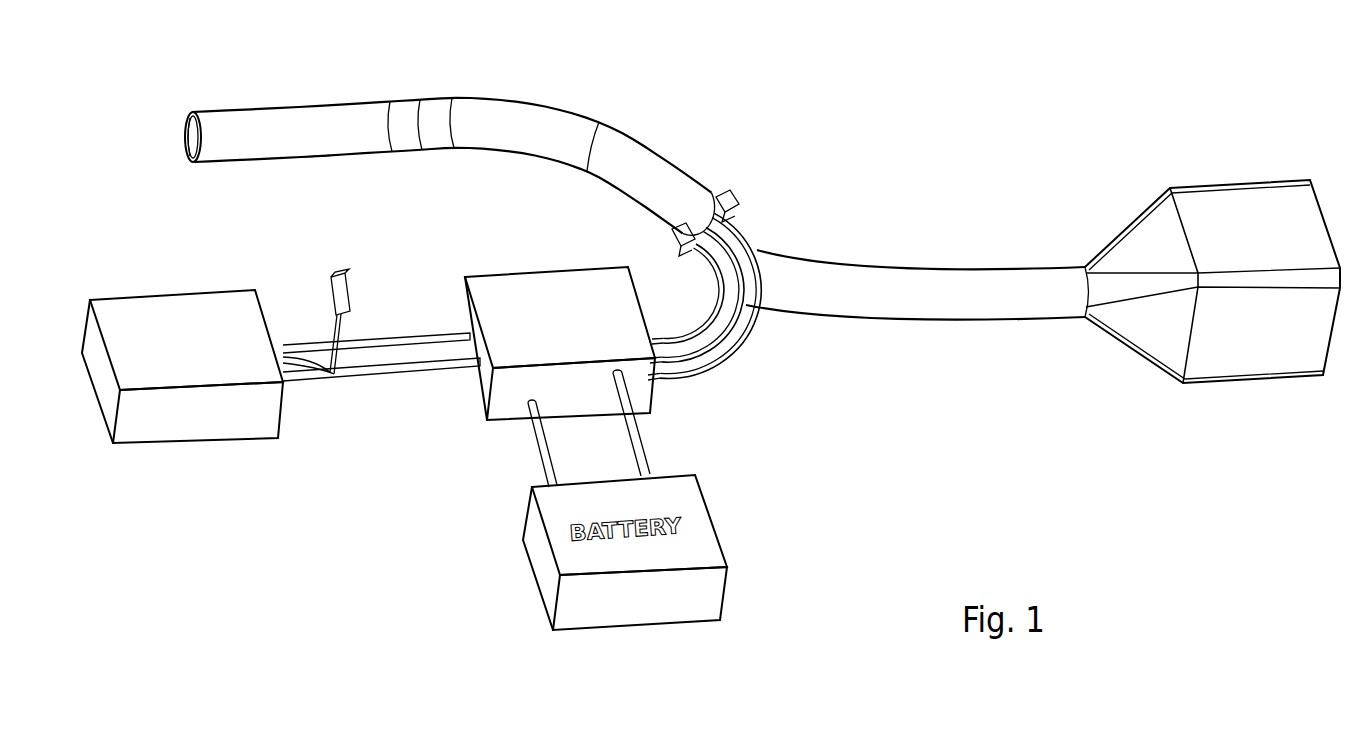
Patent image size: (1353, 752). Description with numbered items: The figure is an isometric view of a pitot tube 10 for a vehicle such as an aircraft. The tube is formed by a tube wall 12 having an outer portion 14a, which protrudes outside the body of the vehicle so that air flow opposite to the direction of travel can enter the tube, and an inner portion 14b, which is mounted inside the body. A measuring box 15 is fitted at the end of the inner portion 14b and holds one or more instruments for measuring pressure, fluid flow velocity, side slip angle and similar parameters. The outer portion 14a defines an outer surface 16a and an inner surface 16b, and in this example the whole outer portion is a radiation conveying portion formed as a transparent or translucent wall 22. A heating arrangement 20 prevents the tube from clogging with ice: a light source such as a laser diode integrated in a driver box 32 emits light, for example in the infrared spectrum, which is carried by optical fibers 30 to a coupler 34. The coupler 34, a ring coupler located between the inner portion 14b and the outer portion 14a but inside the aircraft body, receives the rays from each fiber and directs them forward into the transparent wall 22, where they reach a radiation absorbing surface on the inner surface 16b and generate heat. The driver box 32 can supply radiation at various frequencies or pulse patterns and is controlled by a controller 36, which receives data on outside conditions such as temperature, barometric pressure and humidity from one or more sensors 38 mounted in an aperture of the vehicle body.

The pitot tube 10 is at (962, 115).
The tube wall 12 is at (630, 132).
The outer portion 14a is at (512, 125).
The inner portion 14b is at (932, 303).
The measuring box 15 is at (1208, 223).
The outer surface 16a is at (317, 155).
The inner surface 16b is at (187, 147).
The heating arrangement 20 is at (780, 337).
The transparent wall 22 is at (290, 120).
The optical fibers 30 is at (700, 400).
The driver box 32 is at (535, 293).
The coupler 34 is at (720, 217).
The controller 36 is at (192, 315).
The sensors 38 is at (340, 272).